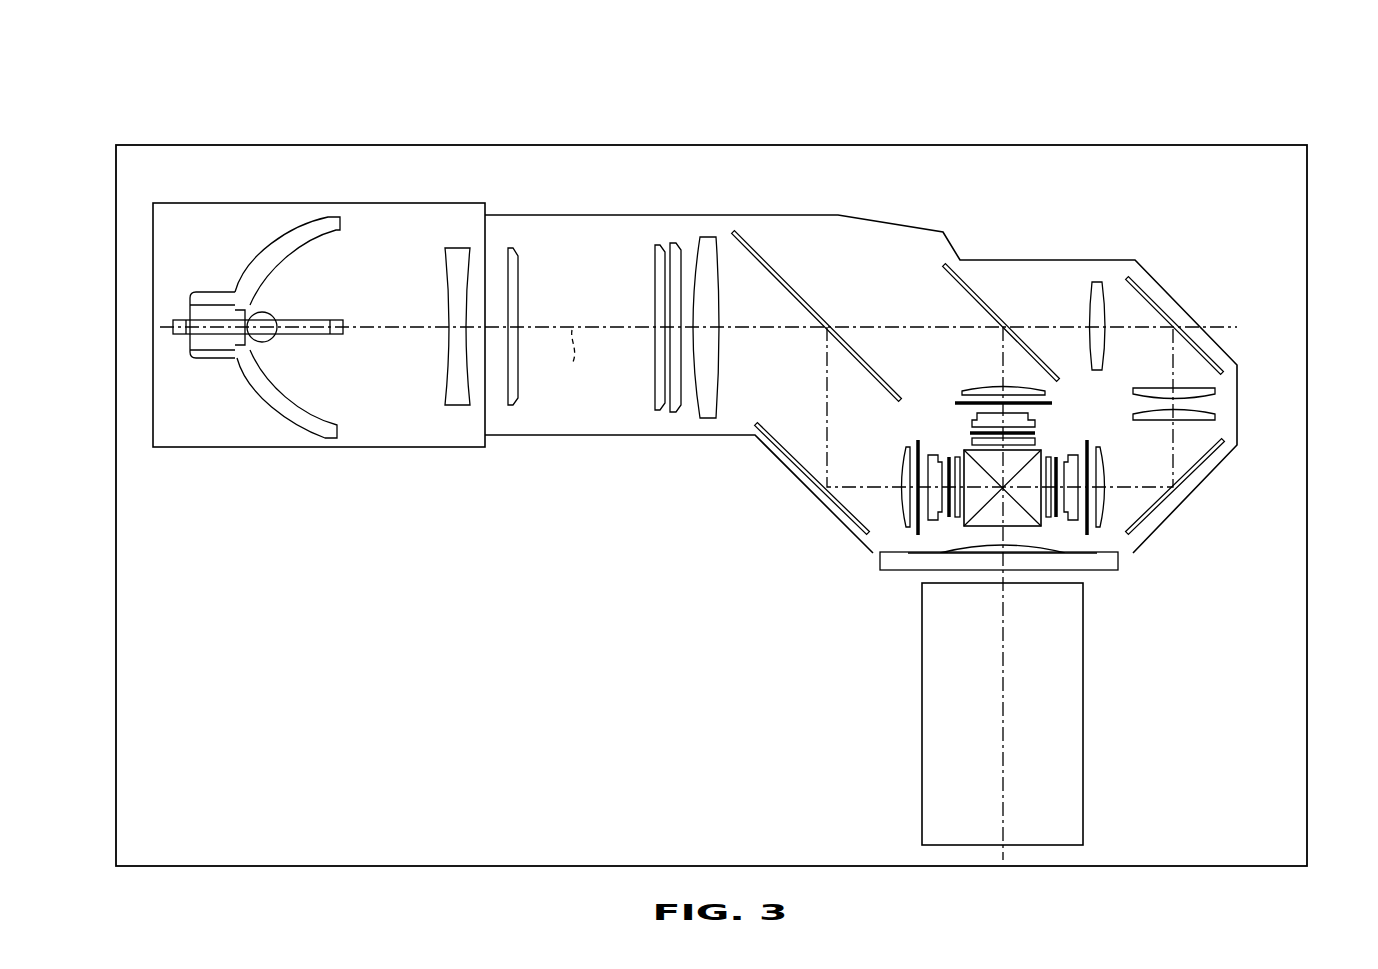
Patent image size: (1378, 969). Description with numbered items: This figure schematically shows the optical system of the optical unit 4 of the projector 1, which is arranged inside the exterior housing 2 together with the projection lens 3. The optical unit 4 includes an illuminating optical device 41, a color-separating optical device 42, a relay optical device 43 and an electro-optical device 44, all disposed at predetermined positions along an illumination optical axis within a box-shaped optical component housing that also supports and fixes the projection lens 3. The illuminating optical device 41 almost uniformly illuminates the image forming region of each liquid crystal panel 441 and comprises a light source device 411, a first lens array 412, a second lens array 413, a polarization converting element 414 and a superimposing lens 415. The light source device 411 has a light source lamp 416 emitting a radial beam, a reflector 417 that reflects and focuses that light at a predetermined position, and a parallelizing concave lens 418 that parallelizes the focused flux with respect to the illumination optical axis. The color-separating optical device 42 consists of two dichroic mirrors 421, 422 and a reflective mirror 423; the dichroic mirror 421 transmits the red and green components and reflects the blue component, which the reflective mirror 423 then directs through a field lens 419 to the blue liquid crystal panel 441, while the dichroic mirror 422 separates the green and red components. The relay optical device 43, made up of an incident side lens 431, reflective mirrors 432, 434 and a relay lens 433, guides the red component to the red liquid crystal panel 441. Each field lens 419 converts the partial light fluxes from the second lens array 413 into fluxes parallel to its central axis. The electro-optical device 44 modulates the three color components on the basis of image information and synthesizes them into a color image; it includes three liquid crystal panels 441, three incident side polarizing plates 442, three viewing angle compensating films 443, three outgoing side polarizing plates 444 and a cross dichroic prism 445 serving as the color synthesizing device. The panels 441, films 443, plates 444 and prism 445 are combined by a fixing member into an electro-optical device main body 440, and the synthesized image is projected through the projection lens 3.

The projector 1 is at (1066, 116).
The exterior housing 2 is at (1307, 258).
The projection lens 3 is at (1083, 730).
The optical unit 4 is at (668, 476).
The illuminating optical device 41 is at (667, 184).
The light source device 411 is at (425, 80).
The first lens array 412 is at (518, 286).
The second lens array 413 is at (658, 250).
The polarization converting element 414 is at (677, 250).
The superimposing lens 415 is at (712, 272).
The light source lamp 416 is at (352, 232).
The reflector 417 is at (313, 227).
The parallelizing concave lens 418 is at (455, 232).
The field lens 419 is at (988, 391).
The color-separating optical device 42 is at (887, 248).
The dichroic mirror 421 is at (772, 270).
The dichroic mirror 422 is at (980, 292).
The reflective mirror 423 is at (770, 432).
The relay optical device 43 is at (1178, 290).
The incident side lens 431 is at (1097, 282).
The reflective mirror 432 is at (1198, 347).
The relay lens 433 is at (1213, 410).
The reflective mirror 434 is at (1205, 468).
The electro-optical device 44 is at (1100, 412).
The electro-optical device main body 440 is at (1064, 412).
The liquid crystal panel 441 is at (1143, 628).
The incident side polarizing plate 442 is at (957, 402).
The viewing angle compensating film 443 is at (968, 433).
The outgoing side polarizing plate 444 is at (1038, 442).
The cross dichroic prism 445 is at (1013, 528).